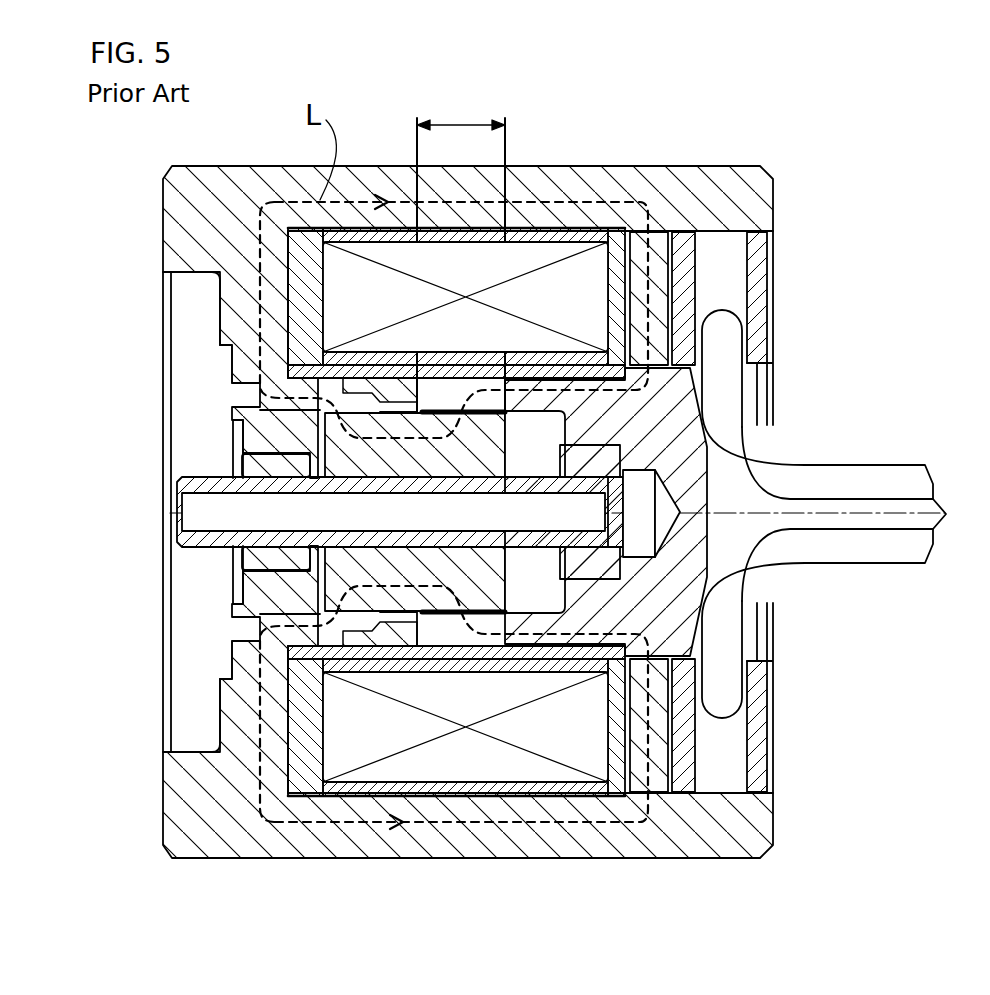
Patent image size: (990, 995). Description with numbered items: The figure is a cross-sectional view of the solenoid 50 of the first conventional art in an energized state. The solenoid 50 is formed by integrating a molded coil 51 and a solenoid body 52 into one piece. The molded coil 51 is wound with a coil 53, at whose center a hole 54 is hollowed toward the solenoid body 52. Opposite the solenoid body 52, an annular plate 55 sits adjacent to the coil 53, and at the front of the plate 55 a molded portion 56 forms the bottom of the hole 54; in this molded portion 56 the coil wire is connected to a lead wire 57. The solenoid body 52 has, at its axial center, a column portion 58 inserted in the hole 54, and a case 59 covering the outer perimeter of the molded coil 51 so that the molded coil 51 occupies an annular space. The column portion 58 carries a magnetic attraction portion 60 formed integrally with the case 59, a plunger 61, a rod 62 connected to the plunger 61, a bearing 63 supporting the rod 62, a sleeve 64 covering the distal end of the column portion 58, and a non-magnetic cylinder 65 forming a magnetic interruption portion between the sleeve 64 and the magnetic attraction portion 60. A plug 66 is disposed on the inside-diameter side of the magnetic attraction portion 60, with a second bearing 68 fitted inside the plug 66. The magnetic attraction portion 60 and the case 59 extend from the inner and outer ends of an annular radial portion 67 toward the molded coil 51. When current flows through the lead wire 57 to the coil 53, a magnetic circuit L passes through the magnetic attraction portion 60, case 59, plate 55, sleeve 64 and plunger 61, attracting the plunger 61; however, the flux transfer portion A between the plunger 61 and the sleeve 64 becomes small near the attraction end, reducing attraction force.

The solenoid 50 is at (548, 158).
The molded coil 51 is at (775, 283).
The solenoid body 52 is at (219, 343).
The coil 53 is at (600, 242).
The hole 54 is at (690, 235).
The annular plate 55 is at (683, 247).
The molded portion 56 is at (768, 336).
The lead wire 57 is at (888, 468).
The column portion 58 is at (707, 577).
The case 59 is at (372, 184).
The magnetic attraction portion 60 is at (272, 202).
The plunger 61 is at (300, 610).
The rod 62 is at (222, 540).
The bearing 63 is at (610, 462).
The sleeve 64 is at (752, 523).
The cylinder 65 is at (395, 212).
The plug 66 is at (258, 430).
The annular radial portion 67 is at (206, 271).
The second bearing 68 is at (250, 463).